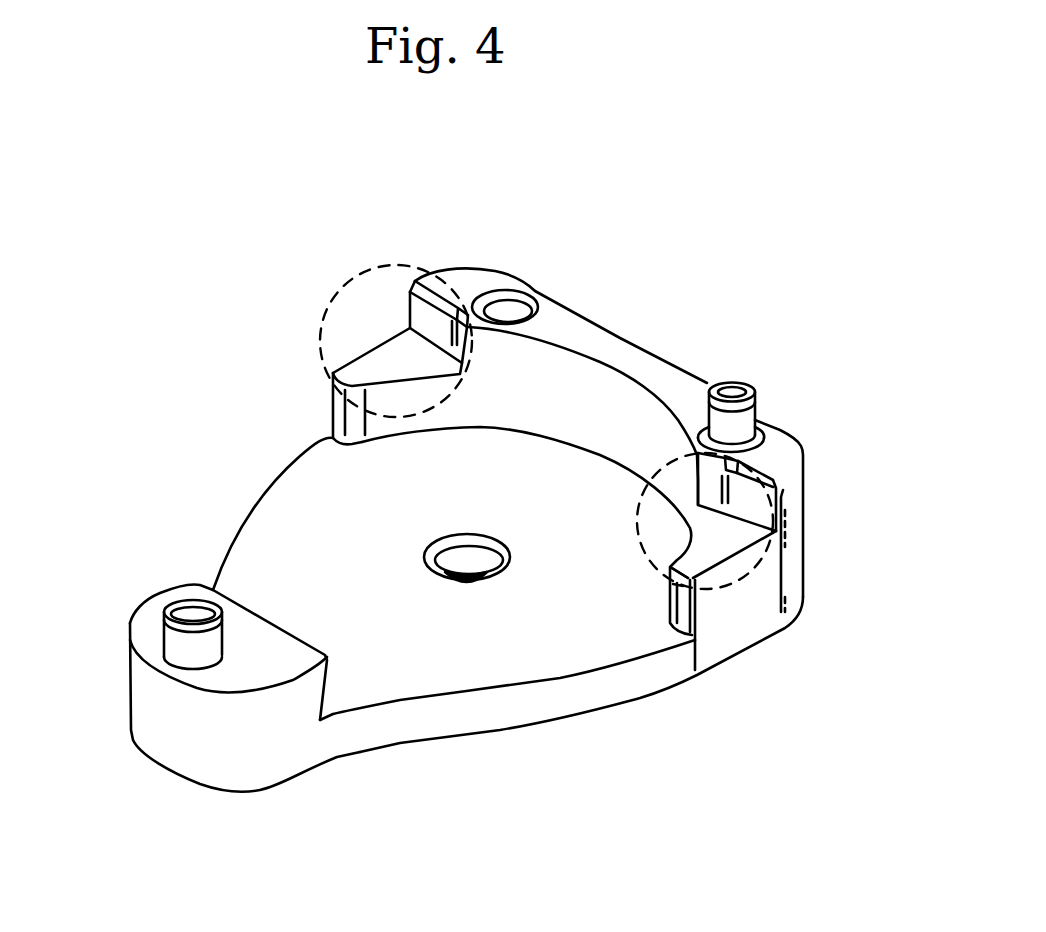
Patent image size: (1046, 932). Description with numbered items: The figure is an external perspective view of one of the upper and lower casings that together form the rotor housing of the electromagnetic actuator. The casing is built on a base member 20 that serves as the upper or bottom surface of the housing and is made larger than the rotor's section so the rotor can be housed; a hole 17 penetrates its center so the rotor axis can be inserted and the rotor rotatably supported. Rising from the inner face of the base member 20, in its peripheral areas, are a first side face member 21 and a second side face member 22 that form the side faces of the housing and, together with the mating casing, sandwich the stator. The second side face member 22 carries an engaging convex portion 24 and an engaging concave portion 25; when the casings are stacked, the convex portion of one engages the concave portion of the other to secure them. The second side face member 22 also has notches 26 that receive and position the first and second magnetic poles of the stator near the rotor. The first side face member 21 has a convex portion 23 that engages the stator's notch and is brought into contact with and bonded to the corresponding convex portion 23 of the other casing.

The hole 17 is at (487, 573).
The base member 20 is at (277, 500).
The first side face member 21 is at (230, 722).
The second side face member 22 is at (615, 348).
The convex portion 23 is at (187, 610).
The engaging convex portion 24 is at (735, 390).
The engaging concave portion 25 is at (508, 307).
The notch 26 is at (330, 297).